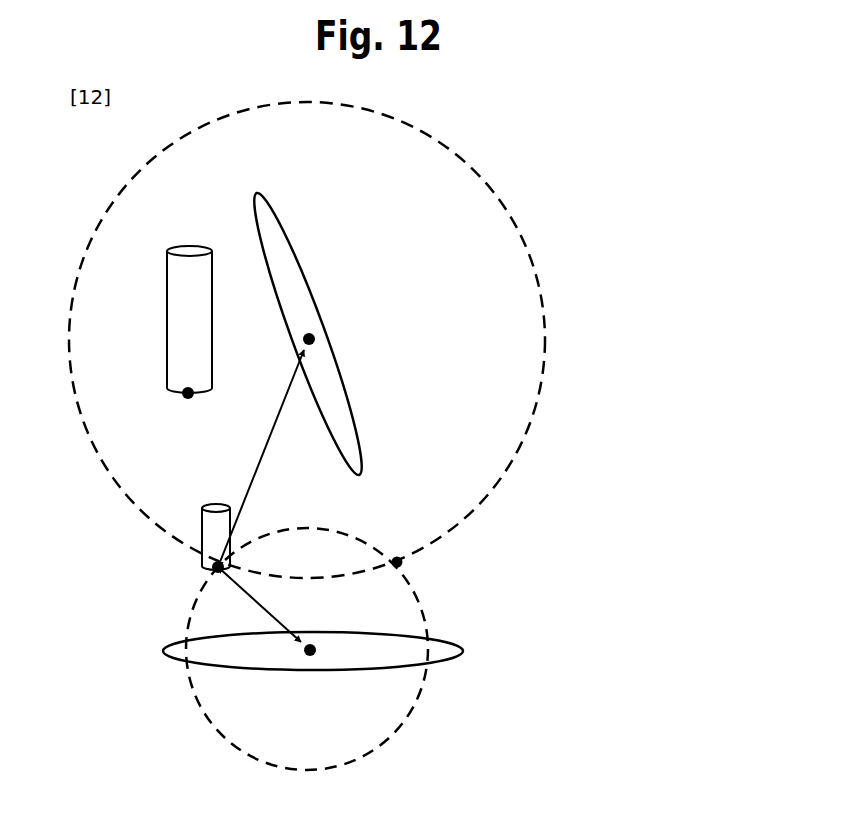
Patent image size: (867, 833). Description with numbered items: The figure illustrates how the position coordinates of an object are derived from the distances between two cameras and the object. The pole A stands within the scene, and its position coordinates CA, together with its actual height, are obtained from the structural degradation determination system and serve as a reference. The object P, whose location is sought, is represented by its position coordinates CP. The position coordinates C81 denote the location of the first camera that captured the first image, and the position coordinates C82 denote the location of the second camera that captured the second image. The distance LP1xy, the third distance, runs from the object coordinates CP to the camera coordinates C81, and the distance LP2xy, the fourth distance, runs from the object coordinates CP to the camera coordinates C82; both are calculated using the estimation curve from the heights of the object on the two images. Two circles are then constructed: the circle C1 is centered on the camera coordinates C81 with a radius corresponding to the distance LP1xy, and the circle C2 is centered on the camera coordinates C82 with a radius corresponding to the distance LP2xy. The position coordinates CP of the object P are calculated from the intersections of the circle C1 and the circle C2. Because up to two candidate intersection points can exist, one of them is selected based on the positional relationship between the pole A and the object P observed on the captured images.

The pole A is at (167, 306).
The position coordinates of the pole CA is at (160, 409).
The position coordinates of the camera 82 C82 is at (316, 331).
The circle C2 is at (545, 320).
The distance LP2xy is at (260, 458).
The object P is at (202, 520).
The position coordinates of the object CP is at (156, 579).
The circle C1 is at (420, 593).
The distance LP1xy is at (271, 604).
The position coordinates of the camera 81 C81 is at (312, 657).